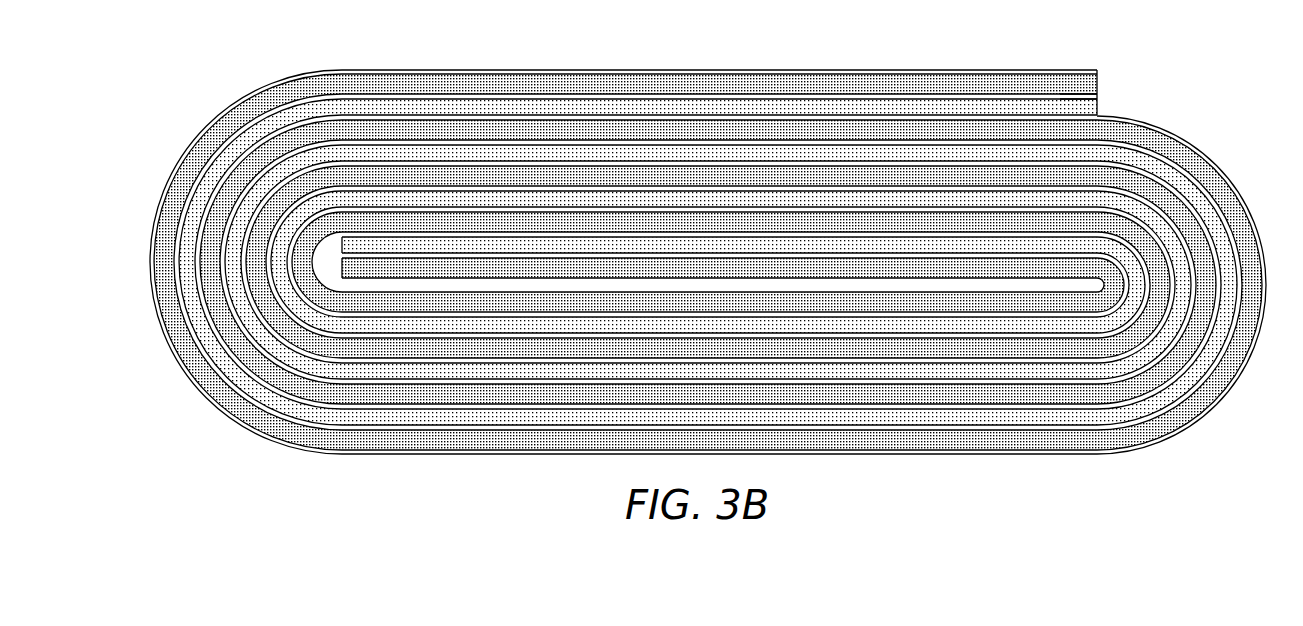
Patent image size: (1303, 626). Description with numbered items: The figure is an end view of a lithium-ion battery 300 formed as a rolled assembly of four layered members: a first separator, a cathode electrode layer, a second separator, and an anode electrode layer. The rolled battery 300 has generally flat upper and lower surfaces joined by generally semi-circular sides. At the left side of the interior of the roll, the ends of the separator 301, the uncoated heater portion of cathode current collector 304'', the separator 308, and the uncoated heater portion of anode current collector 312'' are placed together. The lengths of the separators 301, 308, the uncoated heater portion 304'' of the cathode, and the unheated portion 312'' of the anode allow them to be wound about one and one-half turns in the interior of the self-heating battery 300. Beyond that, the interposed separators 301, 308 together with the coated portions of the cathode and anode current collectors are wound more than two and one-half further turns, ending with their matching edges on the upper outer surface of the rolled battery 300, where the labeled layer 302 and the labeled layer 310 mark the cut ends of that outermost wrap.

The lithium-ion battery 300 is at (671, 227).
The separator 301 is at (326, 246).
The separator layer 302 is at (1108, 83).
The uncoated heater portion of cathode current collector 304'' is at (215, 222).
The separator 308 is at (324, 270).
The second electrode 310 is at (1108, 108).
The uncoated heater portion of anode current collector 312'' is at (223, 322).